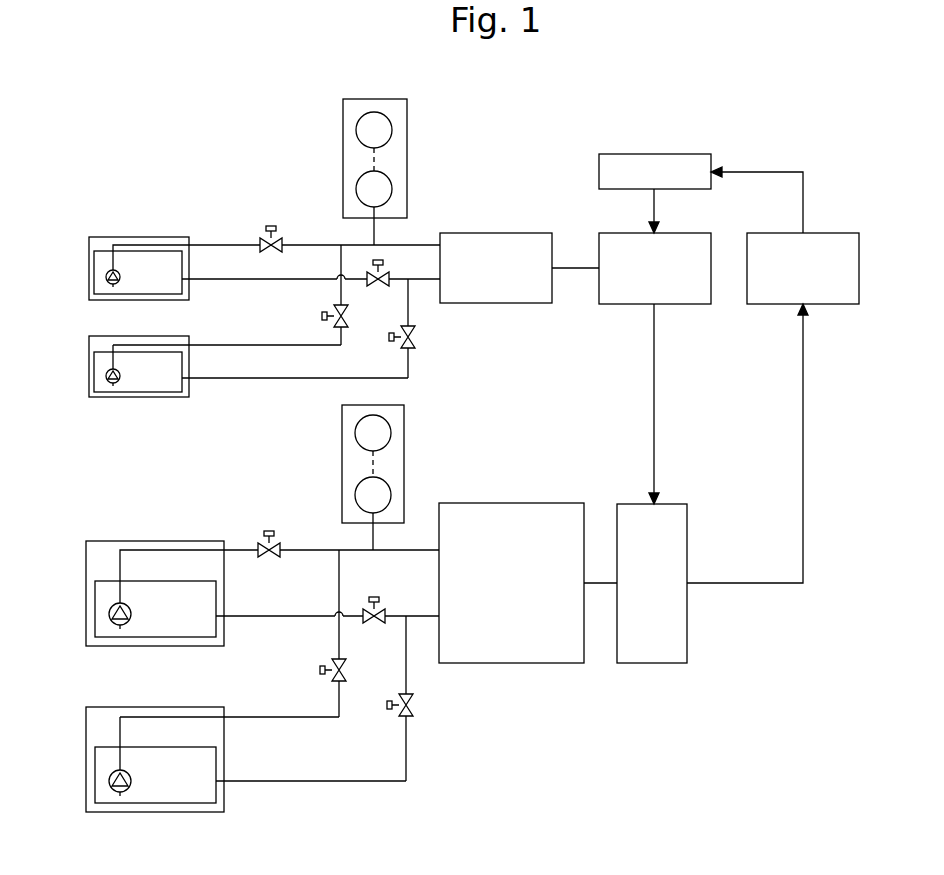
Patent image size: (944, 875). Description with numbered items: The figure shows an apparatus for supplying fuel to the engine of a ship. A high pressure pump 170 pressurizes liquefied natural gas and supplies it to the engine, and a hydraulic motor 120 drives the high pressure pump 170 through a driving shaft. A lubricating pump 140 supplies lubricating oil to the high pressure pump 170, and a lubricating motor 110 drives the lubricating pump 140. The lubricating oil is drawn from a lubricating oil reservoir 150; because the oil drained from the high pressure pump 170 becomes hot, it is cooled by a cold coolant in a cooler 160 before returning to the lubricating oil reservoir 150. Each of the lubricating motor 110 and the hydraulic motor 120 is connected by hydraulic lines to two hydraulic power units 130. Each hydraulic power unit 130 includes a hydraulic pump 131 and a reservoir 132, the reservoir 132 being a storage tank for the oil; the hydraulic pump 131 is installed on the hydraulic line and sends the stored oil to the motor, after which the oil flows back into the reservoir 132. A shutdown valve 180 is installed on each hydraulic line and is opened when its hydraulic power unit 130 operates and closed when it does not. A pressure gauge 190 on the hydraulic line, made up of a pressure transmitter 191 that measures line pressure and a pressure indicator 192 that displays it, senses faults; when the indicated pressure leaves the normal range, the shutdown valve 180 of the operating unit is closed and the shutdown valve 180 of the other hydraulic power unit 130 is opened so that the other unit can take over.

The lubricating motor 110 is at (495, 233).
The hydraulic motor 120 is at (509, 503).
The hydraulic power unit 130 is at (139, 237).
The hydraulic pump 131 is at (106, 277).
The reservoir 132 is at (94, 251).
The lubricating pump 140 is at (694, 233).
The lubricating oil reservoir 150 is at (652, 154).
The cooler 160 is at (835, 233).
The high pressure pump 170 is at (678, 504).
The shutdown valve 180 is at (271, 226).
The pressure gauge 190 is at (375, 99).
The pressure transmitter 191 is at (392, 189).
The pressure indicator 192 is at (392, 130).